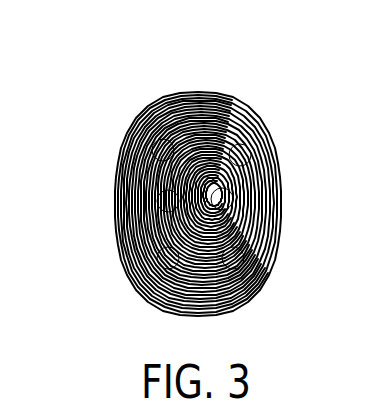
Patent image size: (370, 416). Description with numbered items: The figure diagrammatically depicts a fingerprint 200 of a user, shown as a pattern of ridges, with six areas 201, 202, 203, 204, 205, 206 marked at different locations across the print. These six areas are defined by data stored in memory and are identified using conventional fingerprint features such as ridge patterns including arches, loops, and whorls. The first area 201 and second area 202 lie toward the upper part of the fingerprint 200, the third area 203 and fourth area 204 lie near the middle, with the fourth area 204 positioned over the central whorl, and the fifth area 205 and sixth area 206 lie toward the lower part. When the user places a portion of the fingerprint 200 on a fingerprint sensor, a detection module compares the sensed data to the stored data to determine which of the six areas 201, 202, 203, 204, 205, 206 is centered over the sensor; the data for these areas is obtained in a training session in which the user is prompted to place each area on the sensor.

The fingerprint 200 is at (177, 74).
The first area 201 is at (143, 143).
The second area 202 is at (231, 147).
The third area 203 is at (142, 195).
The fourth area 204 is at (227, 193).
The fifth area 205 is at (150, 251).
The sixth area 206 is at (231, 252).